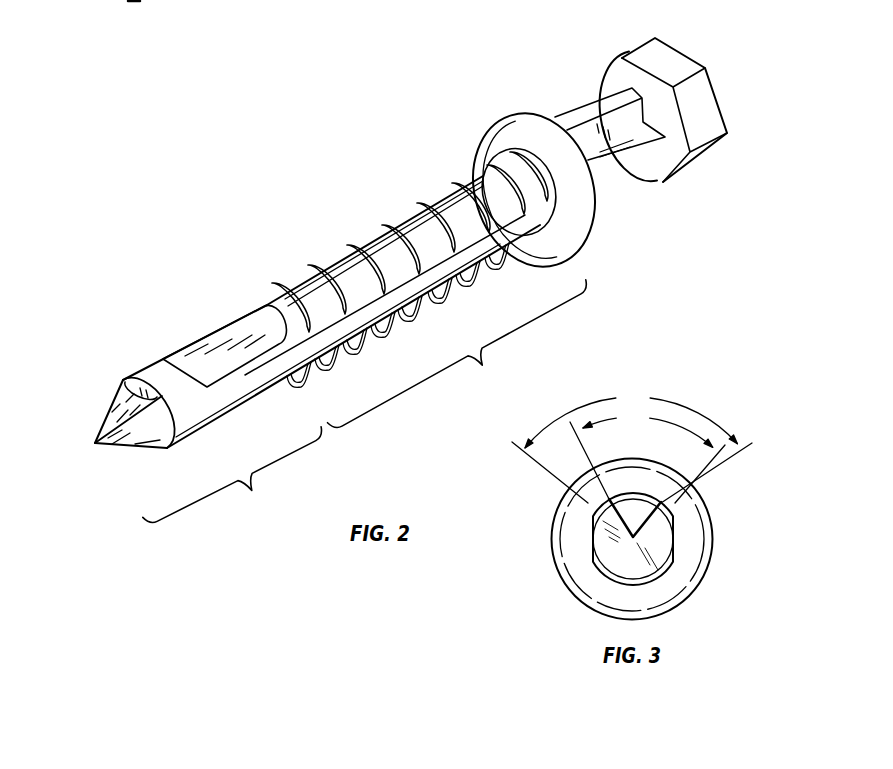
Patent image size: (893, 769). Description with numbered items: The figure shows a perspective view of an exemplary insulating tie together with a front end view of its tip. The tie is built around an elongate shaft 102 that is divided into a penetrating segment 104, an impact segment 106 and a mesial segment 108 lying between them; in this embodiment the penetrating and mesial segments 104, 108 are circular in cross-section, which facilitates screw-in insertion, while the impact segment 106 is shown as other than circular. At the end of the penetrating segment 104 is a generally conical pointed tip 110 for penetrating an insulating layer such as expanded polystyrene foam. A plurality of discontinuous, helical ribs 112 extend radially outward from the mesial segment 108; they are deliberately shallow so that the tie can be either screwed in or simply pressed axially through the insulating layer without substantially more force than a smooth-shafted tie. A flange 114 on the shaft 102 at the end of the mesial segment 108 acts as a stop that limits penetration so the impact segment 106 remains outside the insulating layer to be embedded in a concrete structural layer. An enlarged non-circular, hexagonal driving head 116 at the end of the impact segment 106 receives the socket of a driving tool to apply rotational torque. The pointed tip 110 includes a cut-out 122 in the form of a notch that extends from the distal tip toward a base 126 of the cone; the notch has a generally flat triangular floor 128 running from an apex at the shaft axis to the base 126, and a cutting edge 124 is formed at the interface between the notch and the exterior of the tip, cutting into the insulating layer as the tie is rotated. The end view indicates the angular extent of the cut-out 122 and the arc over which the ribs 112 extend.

In FIG. 2, the elongate shaft 102 is at (558, 237).
In FIG. 2, the penetrating segment 104 is at (232, 475).
In FIG. 2, the impact segment 106 is at (641, 13).
In FIG. 2, the mesial segment 108 is at (457, 354).
In FIG. 2, the pointed tip 110 is at (78, 390).
In FIG. 2, the discontinuous helical ribs 112 is at (347, 245).
In FIG. 3, the discontinuous helical ribs 112 is at (596, 514).
In FIG. 2, the flange 114 is at (494, 143).
In FIG. 2, the driving head 116 is at (668, 54).
In FIG. 2, the cut-out 122 is at (95, 443).
In FIG. 3, the cut-out 122 is at (646, 500).
In FIG. 2, the cutting edge 124 is at (136, 420).
In FIG. 3, the cutting edge 124 is at (670, 534).
In FIG. 2, the base 126 is at (123, 379).
In FIG. 2, the floor 128 is at (161, 368).
In FIG. 3, the floor 128 is at (594, 512).